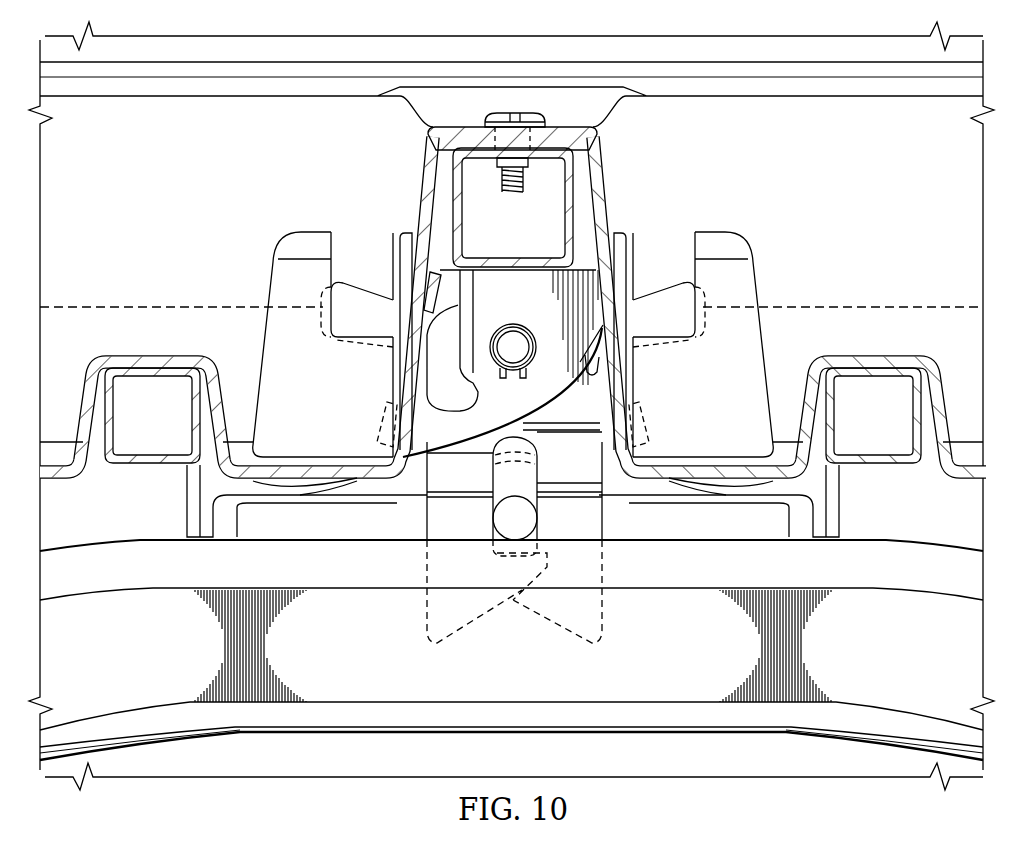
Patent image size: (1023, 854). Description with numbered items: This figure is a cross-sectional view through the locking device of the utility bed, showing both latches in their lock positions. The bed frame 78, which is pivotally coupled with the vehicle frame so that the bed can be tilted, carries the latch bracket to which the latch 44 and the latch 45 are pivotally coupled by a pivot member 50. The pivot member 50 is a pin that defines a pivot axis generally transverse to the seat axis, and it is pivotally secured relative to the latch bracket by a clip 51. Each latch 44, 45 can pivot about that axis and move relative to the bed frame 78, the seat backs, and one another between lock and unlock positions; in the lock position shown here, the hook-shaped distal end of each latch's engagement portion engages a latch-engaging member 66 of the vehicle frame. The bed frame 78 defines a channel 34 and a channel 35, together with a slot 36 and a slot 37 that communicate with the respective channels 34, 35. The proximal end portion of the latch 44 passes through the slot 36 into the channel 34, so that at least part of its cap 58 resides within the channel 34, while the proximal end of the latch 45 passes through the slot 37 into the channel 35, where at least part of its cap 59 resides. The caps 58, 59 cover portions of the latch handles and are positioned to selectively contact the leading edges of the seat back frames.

The channel 34 is at (674, 247).
The channel 35 is at (352, 247).
The slot 36 is at (627, 236).
The slot 37 is at (400, 236).
The latch 44 is at (420, 505).
The latch 45 is at (606, 505).
The pivot member 50 is at (513, 343).
The clip 51 is at (505, 373).
The cap 58 is at (662, 300).
The cap 59 is at (362, 300).
The latch-engaging member 66 is at (503, 512).
The bed frame 78 is at (452, 173).